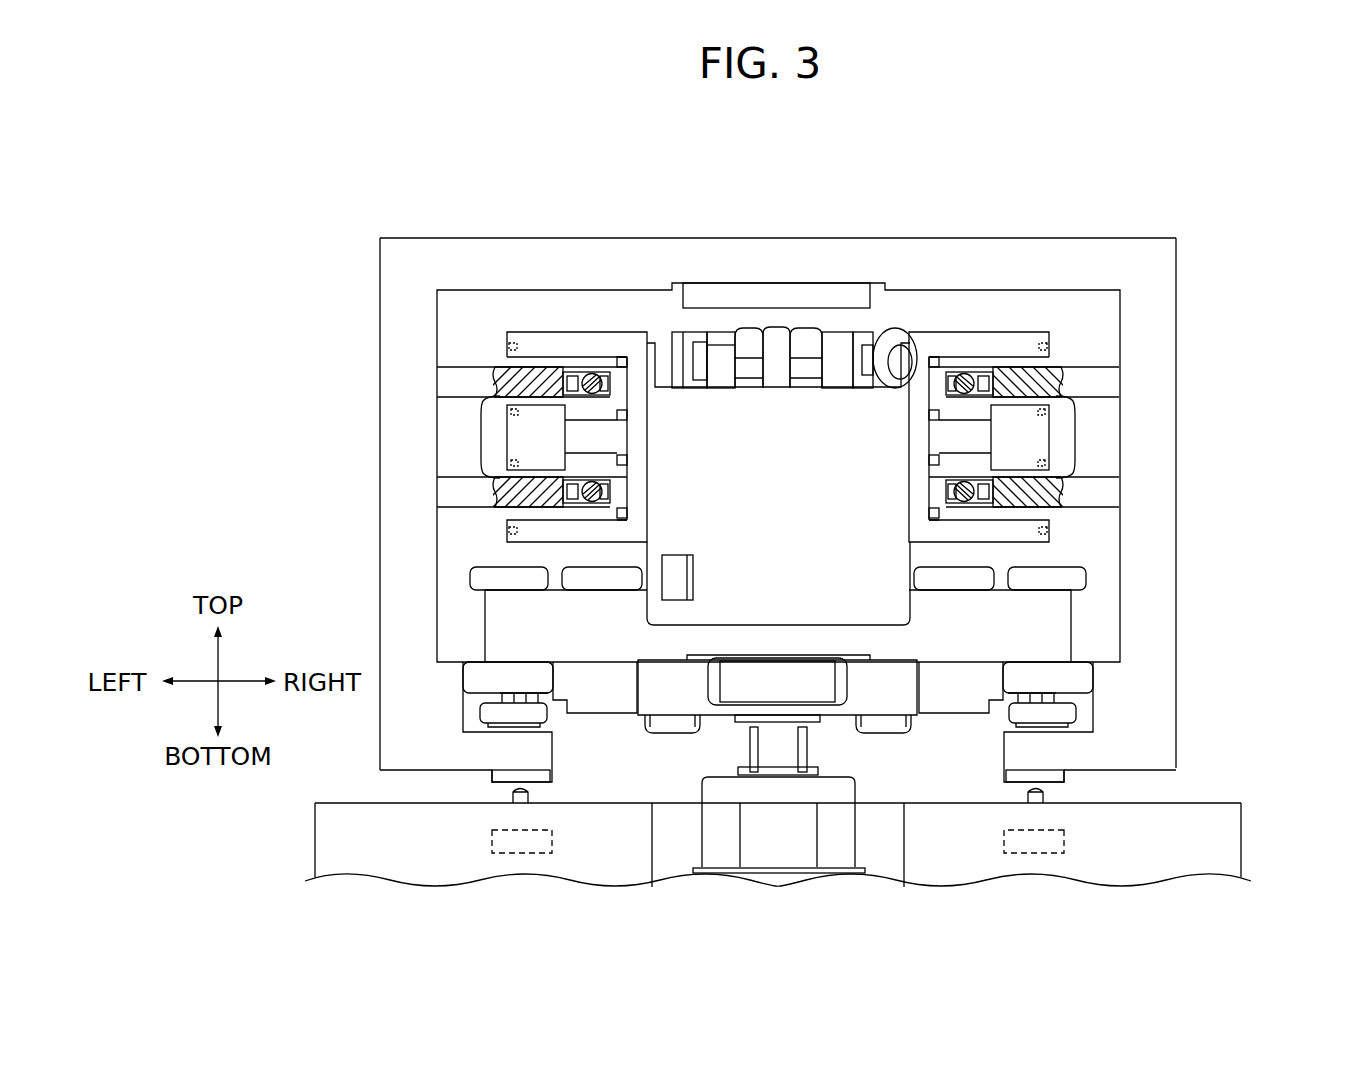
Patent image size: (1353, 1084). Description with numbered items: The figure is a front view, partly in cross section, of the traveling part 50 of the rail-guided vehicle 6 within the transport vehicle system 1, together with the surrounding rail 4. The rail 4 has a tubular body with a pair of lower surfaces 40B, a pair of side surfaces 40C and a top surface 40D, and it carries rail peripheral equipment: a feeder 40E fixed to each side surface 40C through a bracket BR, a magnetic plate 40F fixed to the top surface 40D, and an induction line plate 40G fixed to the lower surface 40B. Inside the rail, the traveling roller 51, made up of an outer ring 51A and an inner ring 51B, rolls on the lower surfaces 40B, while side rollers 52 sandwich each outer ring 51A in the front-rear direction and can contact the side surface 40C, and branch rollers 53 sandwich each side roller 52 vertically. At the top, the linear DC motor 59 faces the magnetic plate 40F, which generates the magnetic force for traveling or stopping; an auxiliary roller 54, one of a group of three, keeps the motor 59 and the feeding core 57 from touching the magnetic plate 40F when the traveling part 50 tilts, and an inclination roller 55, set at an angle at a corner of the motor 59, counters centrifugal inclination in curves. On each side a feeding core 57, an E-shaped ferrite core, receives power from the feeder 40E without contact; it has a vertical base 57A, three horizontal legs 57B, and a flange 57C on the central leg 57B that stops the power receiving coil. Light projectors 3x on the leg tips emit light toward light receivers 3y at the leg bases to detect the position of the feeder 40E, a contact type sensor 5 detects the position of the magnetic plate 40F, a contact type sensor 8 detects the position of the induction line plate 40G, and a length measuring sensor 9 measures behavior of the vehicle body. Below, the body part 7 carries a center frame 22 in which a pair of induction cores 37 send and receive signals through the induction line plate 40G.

The transport vehicle system 1 is at (800, 556).
The rail 4 is at (350, 295).
The contact type sensor 5 is at (722, 332).
The rail-guided vehicle 6 is at (737, 314).
The body part 7 is at (1250, 850).
The contact type sensor 8 is at (500, 798).
The length measuring sensor 9 is at (682, 583).
The center frame 22 is at (1241, 815).
The induction core 37 is at (523, 842).
The lower surface 40B is at (440, 758).
The side surface 40C is at (410, 578).
The top surface 40D is at (1077, 263).
The feeder 40E is at (596, 372).
The magnetic plate 40F is at (860, 297).
The induction line plate 40G is at (552, 777).
The traveling part 50 is at (822, 332).
The traveling roller 51 is at (778, 810).
The outer ring 51A is at (1037, 727).
The inner ring 51B is at (890, 723).
The side roller 52 is at (1077, 677).
The branch roller 53 is at (1023, 715).
The auxiliary roller 54 is at (776, 316).
The inclination roller 55 is at (893, 335).
The feeding core 57 is at (539, 322).
The base 57A is at (640, 450).
The leg 57B is at (520, 348).
The flange 57C is at (530, 425).
The linear DC motor 59 is at (668, 312).
The light projector 3x is at (498, 408).
The light receiver 3y is at (630, 363).
The bracket BR is at (457, 410).